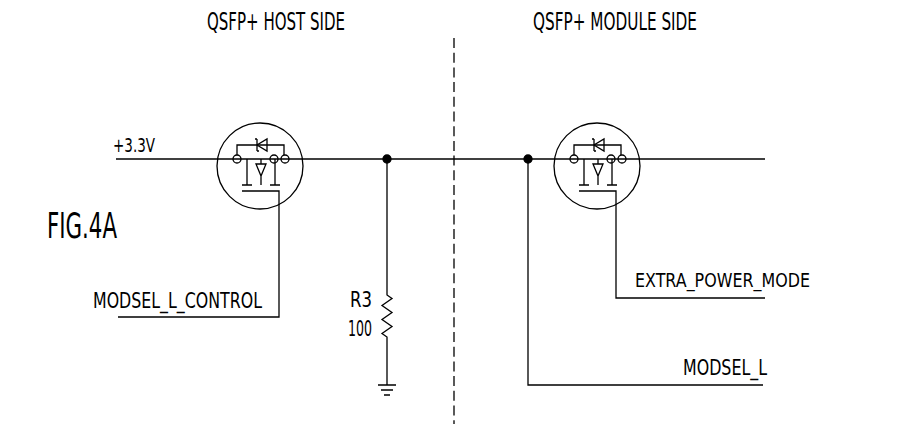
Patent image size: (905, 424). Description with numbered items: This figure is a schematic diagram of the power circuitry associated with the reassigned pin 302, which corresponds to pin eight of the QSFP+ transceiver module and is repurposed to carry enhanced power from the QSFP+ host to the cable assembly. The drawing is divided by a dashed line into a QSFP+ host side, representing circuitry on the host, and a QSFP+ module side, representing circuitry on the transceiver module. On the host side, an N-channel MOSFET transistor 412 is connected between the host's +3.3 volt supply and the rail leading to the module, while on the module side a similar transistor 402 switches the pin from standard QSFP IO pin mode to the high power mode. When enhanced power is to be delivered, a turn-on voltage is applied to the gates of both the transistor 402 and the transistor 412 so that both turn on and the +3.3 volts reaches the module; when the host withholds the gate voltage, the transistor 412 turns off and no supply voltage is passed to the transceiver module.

The transistor on the QSFP+ host side 412 is at (305, 139).
The transistor on the QSFP+ module side 402 is at (643, 138).
The pin 302 is at (788, 114).